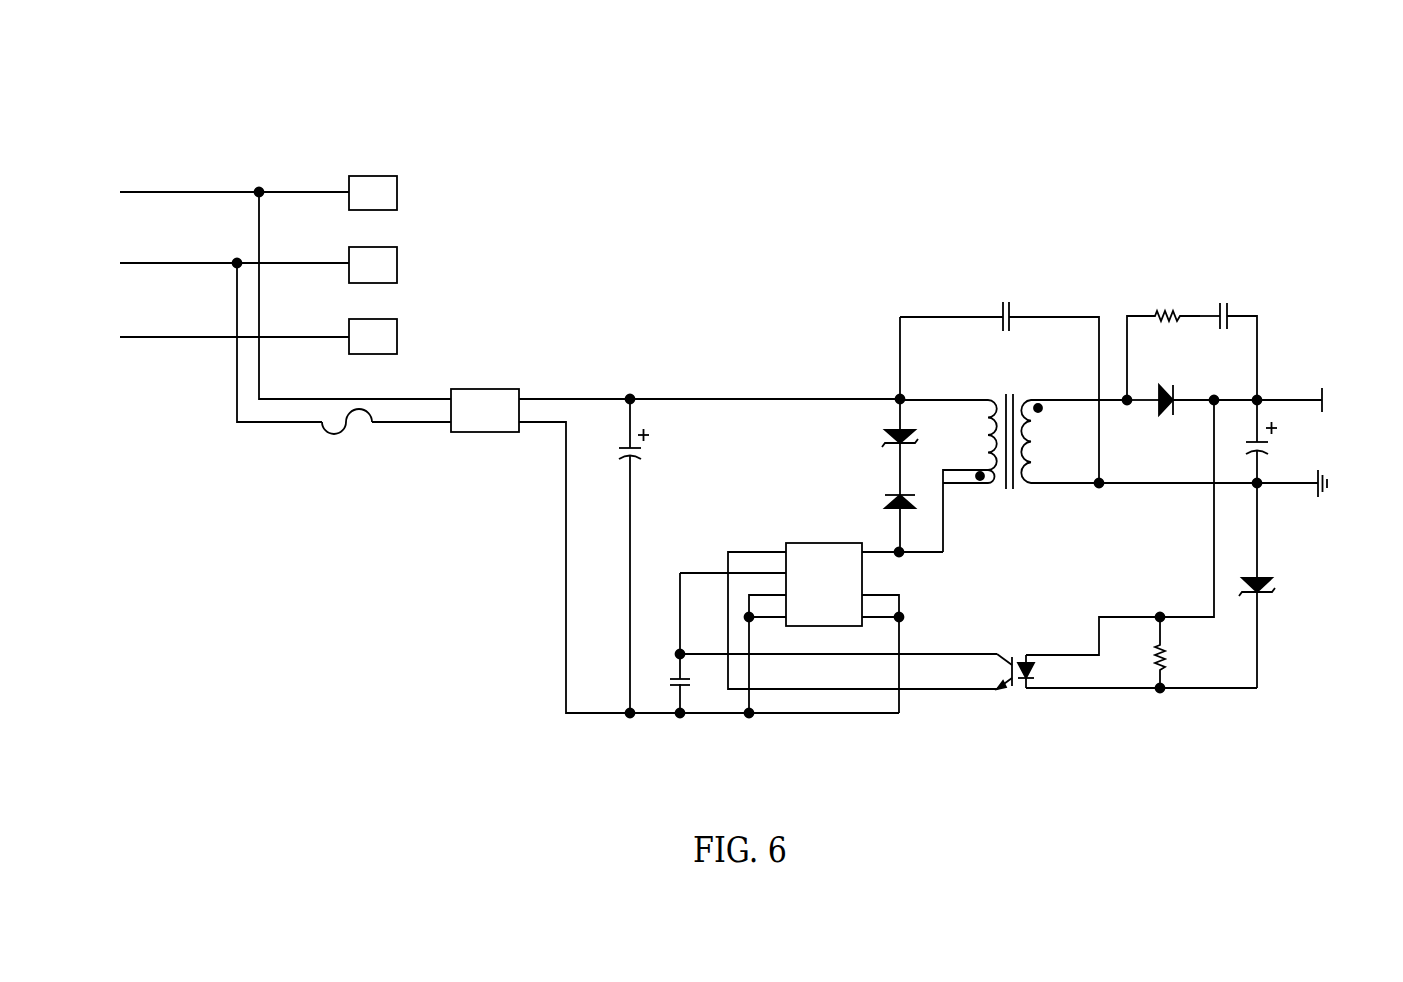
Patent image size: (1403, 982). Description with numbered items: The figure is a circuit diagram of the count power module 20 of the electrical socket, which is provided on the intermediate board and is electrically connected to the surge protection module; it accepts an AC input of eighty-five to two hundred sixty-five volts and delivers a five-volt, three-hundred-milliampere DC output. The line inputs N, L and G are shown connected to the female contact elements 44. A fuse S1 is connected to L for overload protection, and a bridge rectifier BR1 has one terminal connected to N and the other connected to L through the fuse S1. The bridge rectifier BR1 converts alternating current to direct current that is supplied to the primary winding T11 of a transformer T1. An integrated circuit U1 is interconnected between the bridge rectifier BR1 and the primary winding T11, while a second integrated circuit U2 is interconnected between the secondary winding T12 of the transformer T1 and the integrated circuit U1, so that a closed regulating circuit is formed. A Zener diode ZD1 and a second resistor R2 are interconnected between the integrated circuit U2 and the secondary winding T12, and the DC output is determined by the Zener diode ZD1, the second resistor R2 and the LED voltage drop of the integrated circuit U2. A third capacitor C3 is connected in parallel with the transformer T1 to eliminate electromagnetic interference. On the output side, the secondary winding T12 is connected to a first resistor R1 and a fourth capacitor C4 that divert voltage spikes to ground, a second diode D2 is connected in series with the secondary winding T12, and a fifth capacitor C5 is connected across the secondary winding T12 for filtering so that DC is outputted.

The count power module 20 is at (253, 61).
The female contact elements 44 is at (373, 265).
The fuse S1 is at (343, 441).
The bridge rectifier BR1 is at (485, 410).
The integrated circuit U1 is at (824, 584).
The third capacitor C3 is at (999, 377).
The transformer T1 is at (1109, 458).
The primary winding T11 is at (948, 476).
The secondary winding T12 is at (1169, 441).
The second diode D2 is at (1170, 383).
The first resistor R1 is at (1163, 335).
The fourth capacitor C4 is at (1228, 335).
The fifth capacitor C5 is at (1282, 441).
The Zener diode ZD1 is at (1288, 585).
The second resistor R2 is at (1182, 652).
The integrated circuit U2 is at (999, 653).